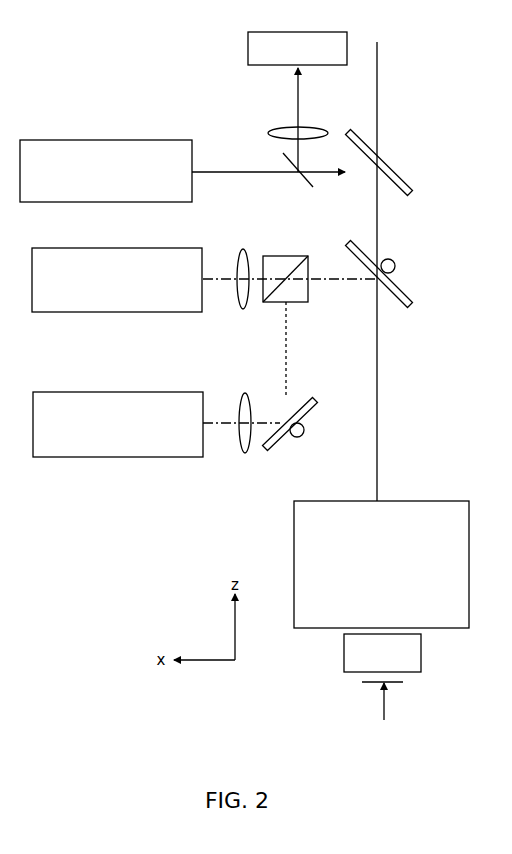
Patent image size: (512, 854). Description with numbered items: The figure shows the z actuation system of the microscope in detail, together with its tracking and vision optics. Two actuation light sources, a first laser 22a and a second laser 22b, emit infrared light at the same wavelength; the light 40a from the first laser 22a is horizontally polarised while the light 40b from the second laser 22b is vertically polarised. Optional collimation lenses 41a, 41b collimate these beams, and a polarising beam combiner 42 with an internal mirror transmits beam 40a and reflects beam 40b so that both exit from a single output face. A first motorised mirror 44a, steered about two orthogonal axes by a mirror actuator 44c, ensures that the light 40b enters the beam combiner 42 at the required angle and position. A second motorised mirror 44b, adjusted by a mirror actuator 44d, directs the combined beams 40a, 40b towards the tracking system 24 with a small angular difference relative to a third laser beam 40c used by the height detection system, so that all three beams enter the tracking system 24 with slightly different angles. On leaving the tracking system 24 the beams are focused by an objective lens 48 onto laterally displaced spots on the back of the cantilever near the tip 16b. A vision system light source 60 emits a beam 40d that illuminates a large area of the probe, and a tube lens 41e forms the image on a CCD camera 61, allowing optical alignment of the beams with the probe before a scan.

The tip 16b is at (382, 717).
The first laser 22a is at (70, 312).
The second laser 22b is at (70, 457).
The tracking system 24 is at (425, 501).
The light from the first laser 40a is at (203, 283).
The light from the second laser 40b is at (203, 423).
The third laser beam 40c is at (382, 152).
The beam emitted by the vision system light source 40d is at (230, 172).
The collimation lens 41a is at (244, 252).
The collimation lens 41b is at (247, 393).
The tube lens 41e is at (312, 130).
The polarising beam combiner 42 is at (300, 258).
The first motorised mirror 44a is at (308, 418).
The second motorised mirror 44b is at (414, 296).
The mirror actuator 44c is at (302, 437).
The mirror actuator 44d is at (396, 262).
The objective lens 48 is at (344, 656).
The vision system light source 60 is at (106, 140).
The CCD camera 61 is at (248, 52).